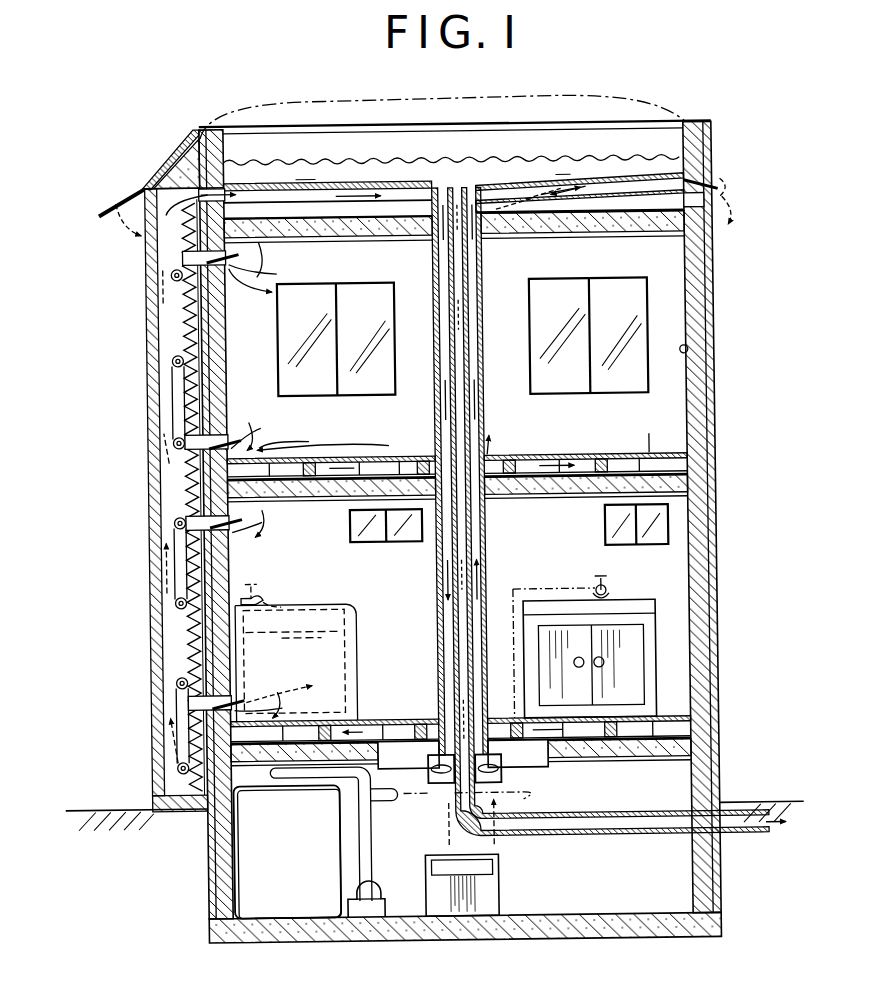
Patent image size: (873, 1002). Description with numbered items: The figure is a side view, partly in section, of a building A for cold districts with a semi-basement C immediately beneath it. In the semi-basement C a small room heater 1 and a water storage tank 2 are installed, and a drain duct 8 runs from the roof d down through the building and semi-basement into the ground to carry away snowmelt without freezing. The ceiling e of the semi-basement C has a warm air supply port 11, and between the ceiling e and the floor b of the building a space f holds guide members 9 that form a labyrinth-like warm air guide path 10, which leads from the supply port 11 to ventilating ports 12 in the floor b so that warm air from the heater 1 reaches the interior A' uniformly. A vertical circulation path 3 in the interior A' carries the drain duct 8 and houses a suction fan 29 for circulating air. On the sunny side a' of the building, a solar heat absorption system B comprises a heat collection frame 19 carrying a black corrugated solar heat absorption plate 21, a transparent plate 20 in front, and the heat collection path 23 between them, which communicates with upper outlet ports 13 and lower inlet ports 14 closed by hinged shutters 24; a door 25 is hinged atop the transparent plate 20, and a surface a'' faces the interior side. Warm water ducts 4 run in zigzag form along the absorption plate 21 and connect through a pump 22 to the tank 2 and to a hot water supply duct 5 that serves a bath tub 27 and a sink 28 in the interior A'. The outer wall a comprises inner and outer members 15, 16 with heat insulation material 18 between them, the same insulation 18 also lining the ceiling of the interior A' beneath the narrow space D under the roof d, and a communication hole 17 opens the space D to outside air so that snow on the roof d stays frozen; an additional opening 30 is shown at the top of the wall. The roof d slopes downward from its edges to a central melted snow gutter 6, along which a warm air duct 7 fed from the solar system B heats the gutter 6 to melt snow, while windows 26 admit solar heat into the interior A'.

The small room heater 1 is at (488, 893).
The water storage tank 2 is at (250, 900).
The circulation path 3 is at (476, 398).
The warm water ducts 4 is at (176, 382).
The hot water supply duct 5 is at (250, 600).
The melted snow gutter 6 is at (400, 186).
The warm air duct 7 is at (258, 188).
The drain duct 8 is at (470, 563).
The guide members 9 is at (655, 742).
The warm air guide path 10 is at (360, 722).
The warm air supply port 11 is at (405, 770).
The ventilating ports 12 is at (675, 712).
The outlet ports 13 is at (205, 255).
The inlet ports 14 is at (200, 460).
The inner member 15 is at (692, 352).
The outer member 16 is at (688, 408).
The communication hole 17 is at (700, 215).
The heat insulation material 18 is at (360, 232).
The heat collection frame 19 is at (168, 215).
The transparent plate 20 is at (158, 496).
The solar heat absorption plate 21 is at (162, 574).
The pump 22 is at (374, 910).
The heat collection path 23 is at (176, 520).
The hinged shutters 24 is at (264, 480).
The door 25 is at (127, 198).
The windows 26 is at (396, 281).
The bath tub 27 is at (338, 645).
The sink 28 is at (628, 630).
The suction fan 29 is at (498, 775).
The vent 30 is at (690, 178).
The building A is at (469, 364).
The interior of the building A' is at (430, 441).
The solar heat absorption system B is at (168, 550).
The semi-basement C is at (652, 234).
The narrow space under the roof D is at (612, 198).
The outer wall a is at (723, 466).
The sunny side a' is at (154, 336).
The collector surface a'' is at (197, 658).
The floor b is at (626, 714).
The roof d is at (536, 186).
The ceiling e is at (254, 768).
The space f is at (410, 724).